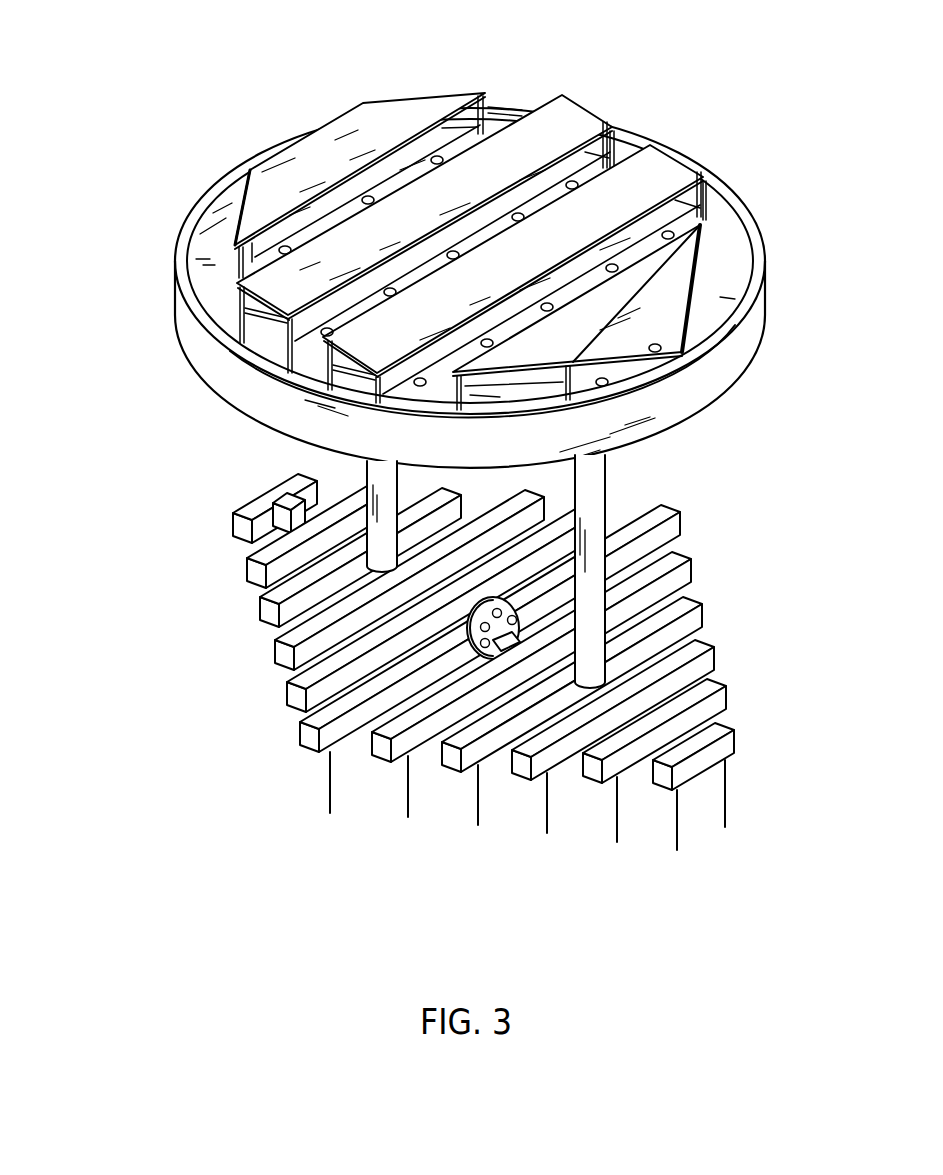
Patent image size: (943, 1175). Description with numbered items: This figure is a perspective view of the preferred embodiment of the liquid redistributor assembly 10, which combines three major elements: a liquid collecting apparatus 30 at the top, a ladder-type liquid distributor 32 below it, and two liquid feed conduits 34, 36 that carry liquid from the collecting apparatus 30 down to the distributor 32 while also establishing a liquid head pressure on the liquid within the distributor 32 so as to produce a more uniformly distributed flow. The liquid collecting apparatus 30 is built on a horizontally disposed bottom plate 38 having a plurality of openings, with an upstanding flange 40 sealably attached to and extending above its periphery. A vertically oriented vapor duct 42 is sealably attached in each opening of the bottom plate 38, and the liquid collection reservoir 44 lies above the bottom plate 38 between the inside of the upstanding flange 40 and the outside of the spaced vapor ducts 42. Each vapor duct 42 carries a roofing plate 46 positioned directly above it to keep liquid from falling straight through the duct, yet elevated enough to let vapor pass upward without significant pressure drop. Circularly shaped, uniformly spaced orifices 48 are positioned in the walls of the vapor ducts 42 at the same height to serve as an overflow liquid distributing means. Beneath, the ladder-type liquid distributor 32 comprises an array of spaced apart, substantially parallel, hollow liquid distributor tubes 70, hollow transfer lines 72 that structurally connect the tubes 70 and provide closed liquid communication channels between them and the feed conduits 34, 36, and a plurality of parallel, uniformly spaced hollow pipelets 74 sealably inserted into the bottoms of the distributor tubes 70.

The liquid redistributor assembly 10 is at (470, 35).
The liquid collecting apparatus 30 is at (194, 421).
The ladder-type liquid distributor 32 is at (487, 688).
The liquid feed conduit 34 is at (370, 467).
The liquid feed conduit 36 is at (606, 477).
The bottom plate 38 is at (728, 288).
The upstanding flange 40 is at (196, 211).
The vapor duct 42 is at (622, 133).
The liquid collection reservoir 44 is at (196, 298).
The roofing plate 46 is at (548, 122).
The orifice 48 is at (437, 155).
The liquid distributor tube 70 is at (244, 583).
The transfer line 72 is at (722, 709).
The pipelet 74 is at (330, 813).